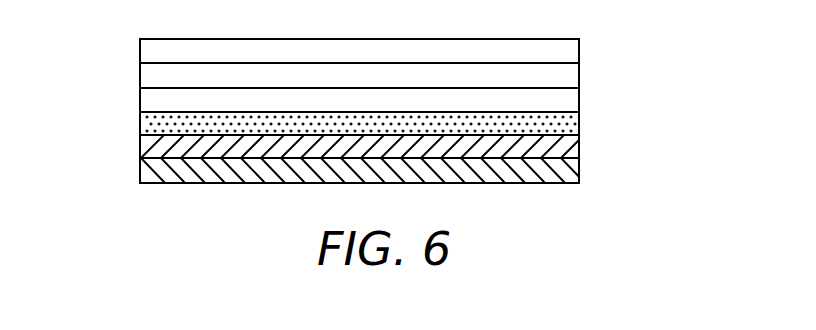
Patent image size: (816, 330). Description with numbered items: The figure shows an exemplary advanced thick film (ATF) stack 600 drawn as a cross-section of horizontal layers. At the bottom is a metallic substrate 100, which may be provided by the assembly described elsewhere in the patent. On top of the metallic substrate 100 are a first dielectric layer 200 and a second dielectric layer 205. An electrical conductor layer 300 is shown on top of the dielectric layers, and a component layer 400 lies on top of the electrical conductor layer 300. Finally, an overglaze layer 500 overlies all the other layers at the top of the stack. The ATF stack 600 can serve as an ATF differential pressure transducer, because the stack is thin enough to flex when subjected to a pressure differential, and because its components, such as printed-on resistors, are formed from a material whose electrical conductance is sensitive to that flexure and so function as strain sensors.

The metallic substrate 100 is at (150, 172).
The first dielectric layer 200 is at (575, 150).
The second dielectric layer 205 is at (150, 123).
The electrical conductor layer 300 is at (568, 100).
The component layer 400 is at (150, 77).
The overglaze layer 500 is at (572, 52).
The ATF stack 600 is at (605, 177).